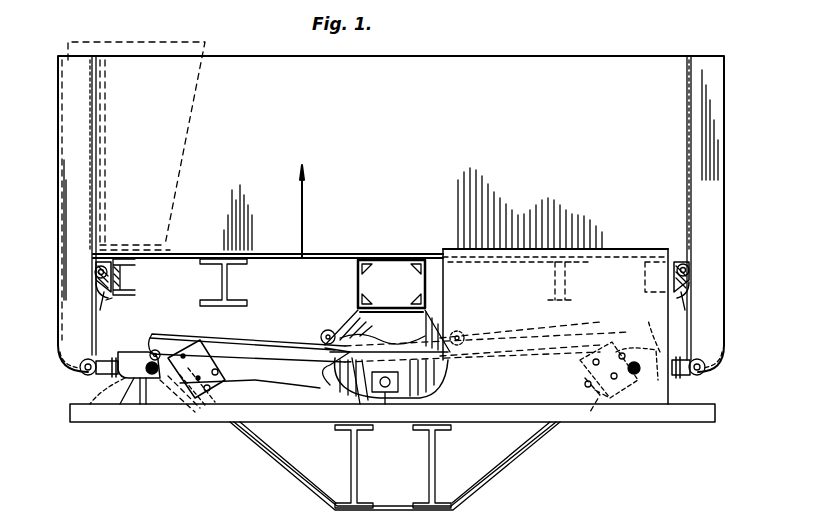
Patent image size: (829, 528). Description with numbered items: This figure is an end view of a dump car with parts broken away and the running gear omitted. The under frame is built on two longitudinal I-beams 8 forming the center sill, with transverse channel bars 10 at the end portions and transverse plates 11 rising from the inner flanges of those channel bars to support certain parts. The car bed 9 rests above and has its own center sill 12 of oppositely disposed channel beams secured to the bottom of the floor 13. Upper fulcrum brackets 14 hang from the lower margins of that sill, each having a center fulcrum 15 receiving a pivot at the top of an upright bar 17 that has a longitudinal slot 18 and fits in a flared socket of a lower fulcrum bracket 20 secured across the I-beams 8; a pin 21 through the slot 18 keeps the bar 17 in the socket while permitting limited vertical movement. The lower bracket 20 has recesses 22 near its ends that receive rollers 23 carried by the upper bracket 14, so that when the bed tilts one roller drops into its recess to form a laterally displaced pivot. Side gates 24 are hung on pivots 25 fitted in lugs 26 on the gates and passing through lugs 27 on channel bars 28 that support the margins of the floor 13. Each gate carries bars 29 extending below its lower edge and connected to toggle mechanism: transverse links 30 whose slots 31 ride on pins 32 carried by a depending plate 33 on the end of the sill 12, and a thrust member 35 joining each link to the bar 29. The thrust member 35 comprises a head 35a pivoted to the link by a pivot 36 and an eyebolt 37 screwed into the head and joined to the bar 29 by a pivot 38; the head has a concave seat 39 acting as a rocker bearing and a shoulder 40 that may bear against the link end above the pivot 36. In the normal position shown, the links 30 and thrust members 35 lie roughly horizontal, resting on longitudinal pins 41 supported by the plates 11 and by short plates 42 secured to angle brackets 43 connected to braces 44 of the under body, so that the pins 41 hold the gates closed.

The I-beams 8 is at (393, 466).
The car bed 9 is at (328, 250).
The channel bars 10 is at (636, 422).
The plates 11 is at (556, 440).
The center sill 12 is at (412, 279).
The floor 13 is at (266, 260).
The upper fulcrum brackets 14 is at (352, 316).
The center fulcrum 15 is at (389, 331).
The upright bar 17 is at (360, 405).
The longitudinal slot 18 is at (372, 420).
The lower fulcrum brackets 20 is at (320, 370).
The pin 21 is at (330, 400).
The recesses 22 is at (535, 388).
The rollers 23 is at (325, 334).
The side gates 24 is at (112, 108).
The pivots 25 is at (96, 270).
The lugs 26 is at (98, 290).
The lugs 27 is at (111, 294).
The channel bars 28 is at (135, 280).
The bars 29 is at (66, 326).
The links 30 is at (268, 346).
The slots 31 is at (280, 388).
The pins 32 is at (330, 390).
The plate 33 is at (391, 300).
The thrust member 35 is at (120, 395).
The head 35a is at (140, 404).
The pivot 36 is at (157, 352).
The eyebolt 37 is at (114, 376).
The pivot 38 is at (80, 374).
The concave seat 39 is at (146, 404).
The shoulder 40 is at (142, 350).
The pins 41 is at (158, 366).
The short plates 42 is at (190, 410).
The angle brackets 43 is at (555, 395).
The braces 44 is at (262, 446).